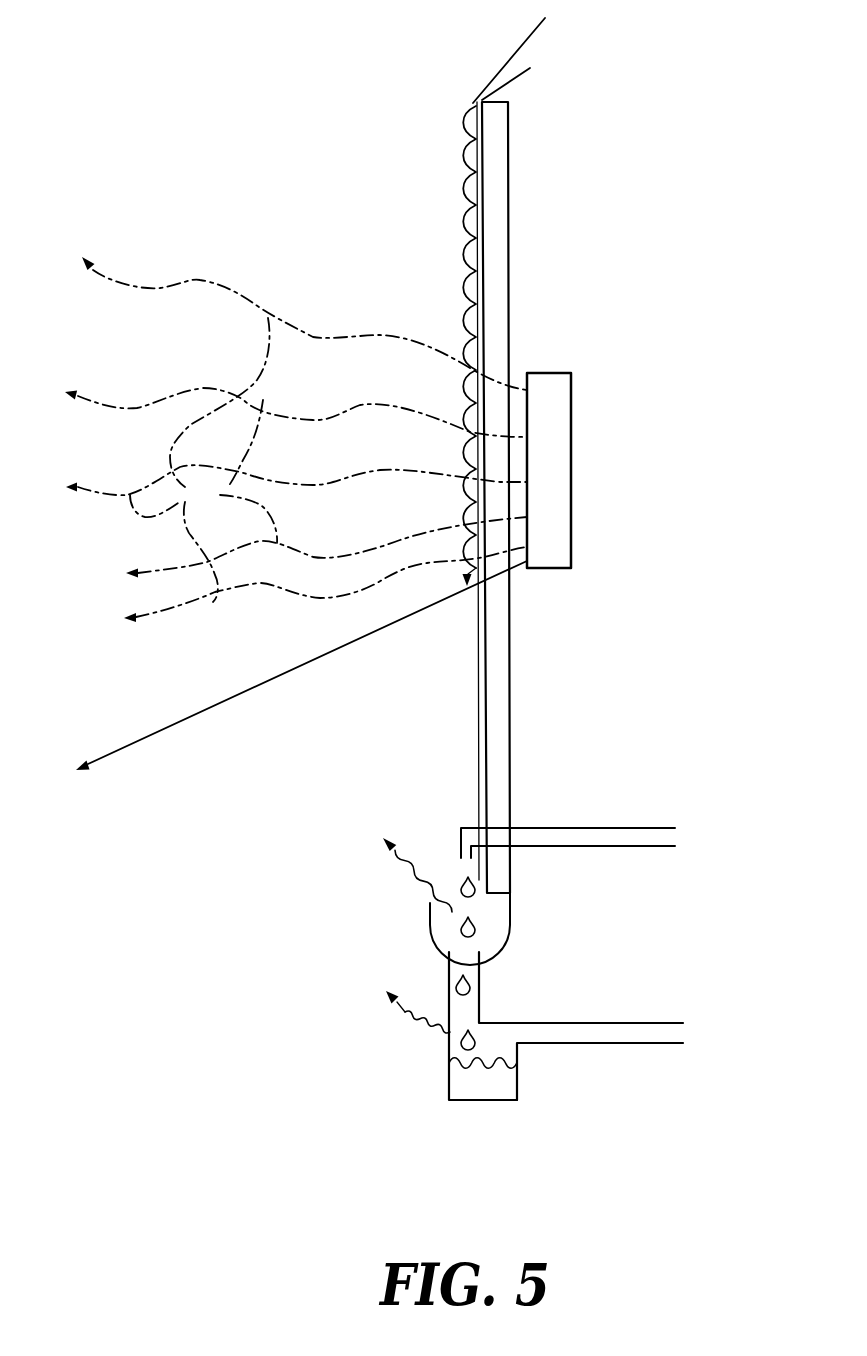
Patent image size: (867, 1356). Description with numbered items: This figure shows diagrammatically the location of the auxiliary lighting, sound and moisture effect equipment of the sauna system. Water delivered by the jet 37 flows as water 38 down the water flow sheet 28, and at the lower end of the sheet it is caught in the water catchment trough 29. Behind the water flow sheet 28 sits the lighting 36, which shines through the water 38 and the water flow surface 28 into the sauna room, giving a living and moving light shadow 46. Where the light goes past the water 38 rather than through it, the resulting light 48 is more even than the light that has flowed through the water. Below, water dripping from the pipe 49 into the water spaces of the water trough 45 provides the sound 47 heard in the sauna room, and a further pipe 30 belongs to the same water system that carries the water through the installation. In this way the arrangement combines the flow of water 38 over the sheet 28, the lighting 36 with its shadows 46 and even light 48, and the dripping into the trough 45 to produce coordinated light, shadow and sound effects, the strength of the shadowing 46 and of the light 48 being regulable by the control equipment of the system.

The water flow sheet 28 is at (500, 223).
The water catchment trough 29 is at (427, 930).
The pipe 30 is at (622, 1022).
The lighting 36 is at (560, 465).
The jet 37 is at (525, 60).
The water 38 is at (467, 190).
The water trough 45 is at (498, 1101).
The shadows 46 is at (296, 439).
The sound 47 is at (440, 892).
The light 48 is at (263, 685).
The pipe 49 is at (592, 826).